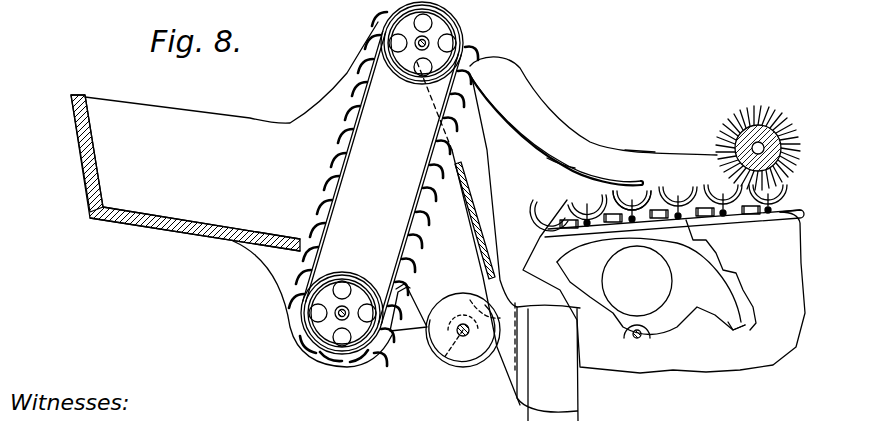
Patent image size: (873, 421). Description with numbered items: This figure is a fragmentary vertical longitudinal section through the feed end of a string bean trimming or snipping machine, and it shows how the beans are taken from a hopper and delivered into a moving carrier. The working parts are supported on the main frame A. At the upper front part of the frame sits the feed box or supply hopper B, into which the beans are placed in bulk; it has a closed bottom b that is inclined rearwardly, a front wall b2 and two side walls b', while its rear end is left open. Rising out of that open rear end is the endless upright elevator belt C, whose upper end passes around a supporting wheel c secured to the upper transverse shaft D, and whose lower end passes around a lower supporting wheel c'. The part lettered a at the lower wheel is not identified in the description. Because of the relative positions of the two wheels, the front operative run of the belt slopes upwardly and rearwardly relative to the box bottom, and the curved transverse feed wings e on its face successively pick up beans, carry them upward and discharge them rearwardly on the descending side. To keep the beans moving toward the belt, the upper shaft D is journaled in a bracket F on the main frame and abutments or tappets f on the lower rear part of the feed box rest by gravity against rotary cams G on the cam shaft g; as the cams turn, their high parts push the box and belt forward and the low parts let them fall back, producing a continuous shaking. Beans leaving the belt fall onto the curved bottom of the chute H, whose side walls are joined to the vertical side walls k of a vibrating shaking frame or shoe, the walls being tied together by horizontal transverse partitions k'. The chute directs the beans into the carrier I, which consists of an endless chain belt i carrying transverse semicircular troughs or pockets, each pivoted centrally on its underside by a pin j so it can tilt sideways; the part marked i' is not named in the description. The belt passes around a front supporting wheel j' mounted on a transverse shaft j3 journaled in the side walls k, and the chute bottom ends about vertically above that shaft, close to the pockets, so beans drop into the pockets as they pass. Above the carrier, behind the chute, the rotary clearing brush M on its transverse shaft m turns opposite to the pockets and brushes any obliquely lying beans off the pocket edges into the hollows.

The side wall b' is at (231, 194).
The front wall b2 is at (77, 128).
The feed box B is at (55, 243).
The bottom b is at (201, 233).
The elevator belt C is at (382, 178).
The feed wings e is at (414, 212).
The upper transverse shaft D is at (395, 33).
The supporting wheel c is at (460, 33).
The supporting wheel c' is at (332, 333).
The lower pulley shaft a is at (345, 305).
The abutments f is at (407, 323).
The rotary cams G is at (447, 347).
The cam shaft g is at (465, 337).
The bracket F is at (470, 210).
The main frame A is at (524, 249).
The chute H is at (595, 116).
The side wall k is at (621, 278).
The transverse partition k' is at (641, 138).
The pin j is at (662, 284).
The front supporting wheel j' is at (744, 338).
The transverse shaft j3 is at (637, 338).
The chain belt i is at (667, 217).
The cup i' is at (649, 184).
The carrier I is at (778, 222).
The clearing brush M is at (766, 113).
The brush shaft m is at (738, 114).